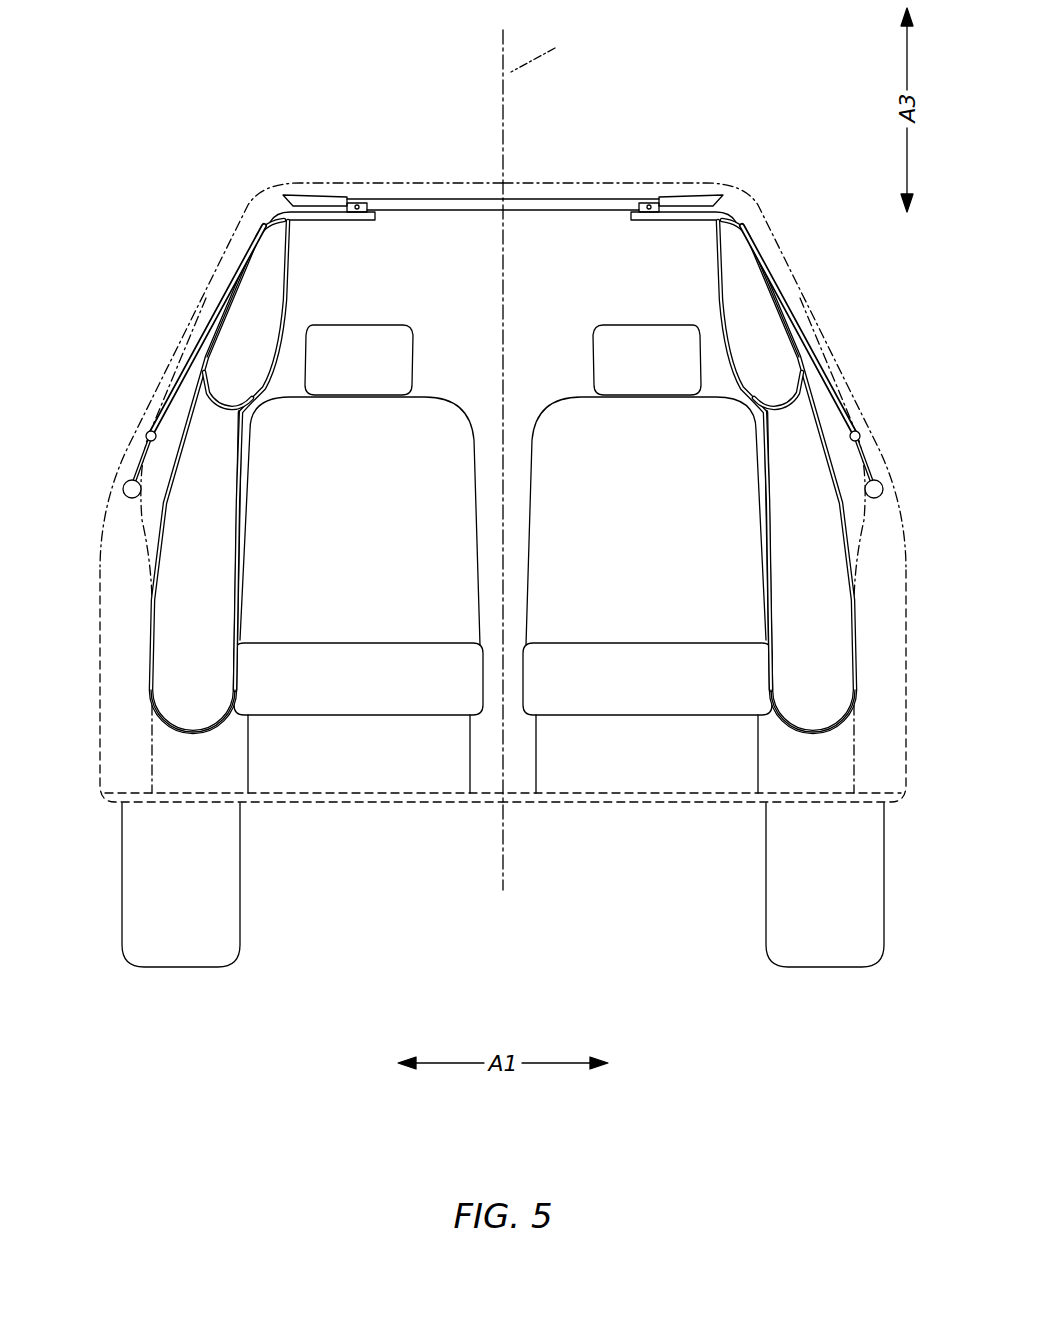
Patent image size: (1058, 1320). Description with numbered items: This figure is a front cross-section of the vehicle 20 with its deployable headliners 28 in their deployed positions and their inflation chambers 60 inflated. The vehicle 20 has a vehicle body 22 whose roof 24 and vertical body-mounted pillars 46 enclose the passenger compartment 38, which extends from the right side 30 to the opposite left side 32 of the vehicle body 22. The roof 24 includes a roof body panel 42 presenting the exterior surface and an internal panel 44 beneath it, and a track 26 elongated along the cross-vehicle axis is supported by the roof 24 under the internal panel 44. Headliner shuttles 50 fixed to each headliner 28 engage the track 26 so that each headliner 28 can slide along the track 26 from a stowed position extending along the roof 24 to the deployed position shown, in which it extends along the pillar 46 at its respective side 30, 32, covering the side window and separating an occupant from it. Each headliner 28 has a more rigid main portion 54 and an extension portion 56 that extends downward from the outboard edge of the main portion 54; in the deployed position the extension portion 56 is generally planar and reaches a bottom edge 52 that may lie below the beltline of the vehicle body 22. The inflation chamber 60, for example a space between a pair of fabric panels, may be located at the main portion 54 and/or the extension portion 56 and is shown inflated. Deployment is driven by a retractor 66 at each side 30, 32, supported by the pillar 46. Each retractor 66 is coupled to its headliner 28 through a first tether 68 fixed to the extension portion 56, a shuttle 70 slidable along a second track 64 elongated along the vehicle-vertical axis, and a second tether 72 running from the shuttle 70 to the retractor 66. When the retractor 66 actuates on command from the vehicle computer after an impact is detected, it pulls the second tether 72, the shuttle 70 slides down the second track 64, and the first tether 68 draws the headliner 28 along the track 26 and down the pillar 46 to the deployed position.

The vehicle 20 is at (221, 90).
The vehicle body 22 is at (253, 195).
The roof 24 is at (423, 196).
The track 26 is at (441, 212).
The headliner 28 is at (320, 288).
The right side 30 is at (100, 618).
The left side 32 is at (905, 620).
The passenger compartment 38 is at (523, 460).
The roof body panel 42 is at (577, 196).
The internal panel 44 is at (310, 195).
The pillar 46 is at (160, 372).
The headliner shuttle 50 is at (357, 203).
The bottom edge 52 is at (195, 730).
The main portion 54 is at (267, 390).
The extension portion 56 is at (238, 573).
The inflation chamber 60 is at (503, 472).
The second track 64 is at (210, 330).
The retractor 66 is at (123, 487).
The first tether 68 is at (217, 307).
The shuttle 70 is at (148, 432).
The second tether 72 is at (143, 462).